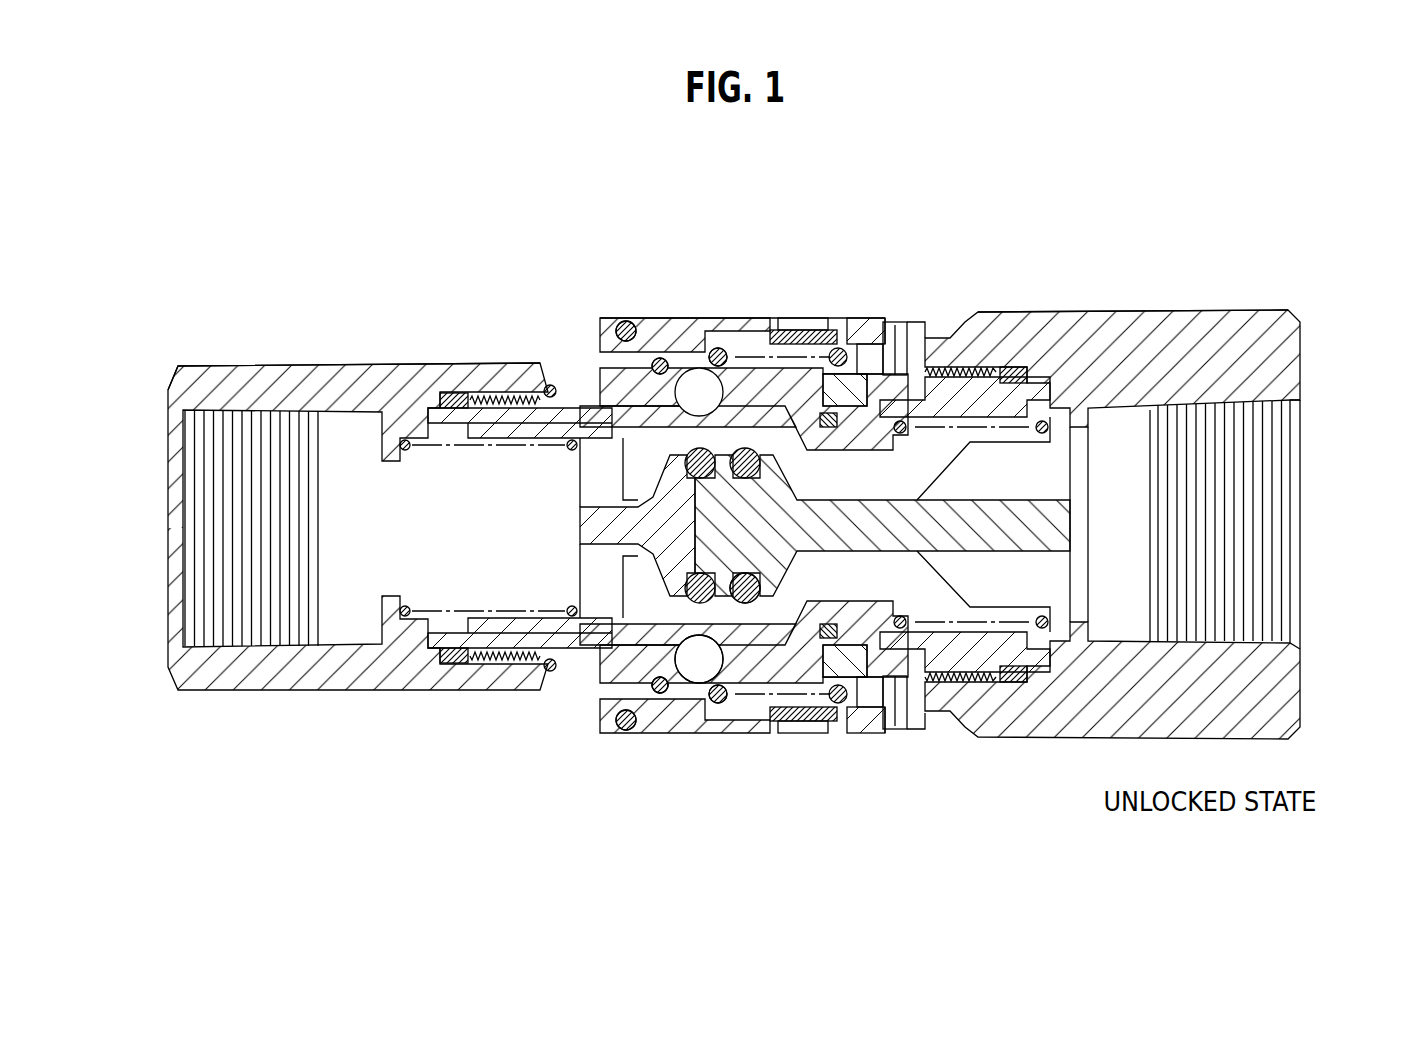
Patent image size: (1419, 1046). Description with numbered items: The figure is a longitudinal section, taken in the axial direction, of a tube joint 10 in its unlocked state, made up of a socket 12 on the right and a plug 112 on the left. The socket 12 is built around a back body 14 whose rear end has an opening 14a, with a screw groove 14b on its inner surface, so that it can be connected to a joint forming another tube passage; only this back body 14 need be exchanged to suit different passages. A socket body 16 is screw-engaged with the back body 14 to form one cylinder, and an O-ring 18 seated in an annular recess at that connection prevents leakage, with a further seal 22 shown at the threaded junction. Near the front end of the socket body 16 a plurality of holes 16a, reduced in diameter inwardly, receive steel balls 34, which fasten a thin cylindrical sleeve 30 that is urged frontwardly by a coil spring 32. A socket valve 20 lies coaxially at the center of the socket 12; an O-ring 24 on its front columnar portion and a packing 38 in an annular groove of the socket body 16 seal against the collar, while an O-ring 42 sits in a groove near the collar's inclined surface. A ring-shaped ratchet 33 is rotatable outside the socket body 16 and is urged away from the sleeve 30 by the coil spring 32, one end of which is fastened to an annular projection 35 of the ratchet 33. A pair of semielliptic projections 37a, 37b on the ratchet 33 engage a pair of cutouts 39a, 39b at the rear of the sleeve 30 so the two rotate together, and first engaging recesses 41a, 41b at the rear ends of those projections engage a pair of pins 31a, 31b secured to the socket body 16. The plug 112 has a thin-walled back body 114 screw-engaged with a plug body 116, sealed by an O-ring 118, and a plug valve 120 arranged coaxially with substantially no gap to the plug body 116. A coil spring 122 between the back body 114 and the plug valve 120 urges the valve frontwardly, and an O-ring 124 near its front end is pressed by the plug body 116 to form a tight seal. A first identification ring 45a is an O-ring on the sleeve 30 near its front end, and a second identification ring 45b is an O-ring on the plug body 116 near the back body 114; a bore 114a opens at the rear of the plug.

The tube joint 10 is at (917, 201).
The socket 12 is at (997, 252).
The back body 14 is at (1152, 345).
The opening 14a is at (1280, 545).
The screw groove 14b is at (1292, 408).
The socket body 16 is at (753, 378).
The holes 16a is at (679, 378).
The O-ring 18 is at (1014, 684).
The socket valve 20 is at (795, 499).
The seal 22 is at (1042, 367).
The O-ring 24 is at (704, 702).
The sleeve 30 is at (658, 318).
The pin 31a is at (902, 325).
The pin 31b is at (907, 722).
The coil spring 32 is at (830, 347).
The ratchet 33 is at (850, 320).
The steel balls 34 is at (700, 382).
The annular projection 35 is at (868, 412).
The projection 37a is at (848, 376).
The projection 37b is at (848, 678).
The packing 38 is at (752, 604).
The cutout 39a is at (785, 330).
The cutout 39b is at (792, 722).
The first engaging recess 41a is at (890, 322).
The first engaging recess 41b is at (892, 729).
The O-ring 42 is at (830, 614).
The first identification ring 45a is at (632, 733).
The second identification ring 45b is at (550, 671).
The plug 112 is at (372, 308).
The back body 114 is at (330, 378).
The threaded bore 114a is at (195, 545).
The plug body 116 is at (578, 410).
The O-ring 118 is at (455, 395).
The plug valve 120 is at (668, 500).
The coil spring 122 is at (405, 616).
The O-ring 124 is at (692, 686).